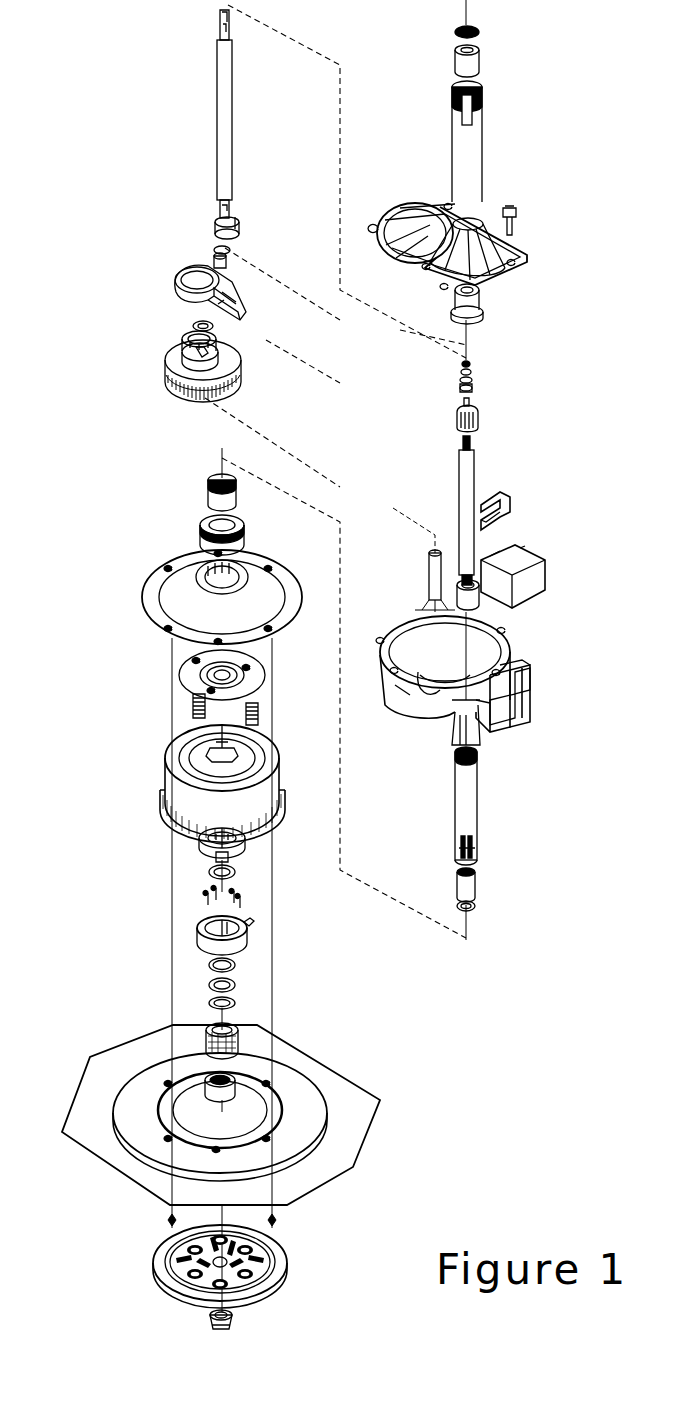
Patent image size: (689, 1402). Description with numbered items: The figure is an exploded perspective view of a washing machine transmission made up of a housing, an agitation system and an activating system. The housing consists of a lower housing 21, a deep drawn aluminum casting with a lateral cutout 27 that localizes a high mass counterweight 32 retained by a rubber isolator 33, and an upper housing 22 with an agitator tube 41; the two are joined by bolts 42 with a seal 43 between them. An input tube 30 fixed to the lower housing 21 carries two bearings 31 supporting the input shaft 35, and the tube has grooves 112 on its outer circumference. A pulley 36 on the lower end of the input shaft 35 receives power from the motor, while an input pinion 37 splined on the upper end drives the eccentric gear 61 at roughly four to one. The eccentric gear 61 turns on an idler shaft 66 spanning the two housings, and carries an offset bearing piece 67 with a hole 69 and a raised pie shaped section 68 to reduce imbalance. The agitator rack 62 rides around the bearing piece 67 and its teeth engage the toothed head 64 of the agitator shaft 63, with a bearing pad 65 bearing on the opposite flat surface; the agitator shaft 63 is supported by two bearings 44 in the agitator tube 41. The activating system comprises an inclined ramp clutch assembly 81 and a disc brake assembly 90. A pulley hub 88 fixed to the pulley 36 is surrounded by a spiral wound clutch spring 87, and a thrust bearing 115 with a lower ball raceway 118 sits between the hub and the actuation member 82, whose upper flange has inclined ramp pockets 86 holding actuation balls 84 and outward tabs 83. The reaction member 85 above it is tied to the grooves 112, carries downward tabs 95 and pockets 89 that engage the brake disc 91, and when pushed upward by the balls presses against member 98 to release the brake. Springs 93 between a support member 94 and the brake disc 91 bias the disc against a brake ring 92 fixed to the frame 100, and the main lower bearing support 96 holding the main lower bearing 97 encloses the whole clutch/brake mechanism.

The lower housing 21 is at (384, 672).
The upper housing 22 is at (520, 256).
The lateral cutout 27 is at (510, 706).
The input tube 30 is at (475, 800).
The bearings 31 is at (480, 598).
The counterweight 32 is at (545, 555).
The rubber isolator 33 is at (510, 495).
The input shaft 35 is at (471, 475).
The pulley 36 is at (156, 1257).
The input pinion 37 is at (475, 410).
The agitator tube 41 is at (477, 152).
The bolts 42 is at (514, 210).
The seal 43 is at (514, 656).
The bearings 44 is at (479, 60).
The eccentric gear 61 is at (168, 372).
The agitator rack 62 is at (178, 276).
The agitator shaft 63 is at (217, 178).
The toothed head 64 is at (215, 225).
The bearing pad 65 is at (214, 258).
The idler shaft 66 is at (430, 575).
The bearing piece 67 is at (183, 342).
The raised pie shaped section 68 is at (207, 371).
The hole 69 is at (194, 326).
The inclined ramp clutch assembly 81 is at (86, 946).
The actuation member 82 is at (207, 963).
The tabs 83 is at (265, 929).
The actuation balls 84 is at (240, 896).
The reaction member 85 is at (200, 845).
The inclined ramp pockets 86 is at (244, 920).
The clutch spring 87 is at (206, 1040).
The pulley hub 88 is at (206, 1086).
The pockets 89 is at (243, 838).
The disc brake assembly 90 is at (86, 826).
The brake disc 91 is at (284, 800).
The brake ring 92 is at (162, 1106).
The springs 93 is at (193, 703).
The support member 94 is at (186, 674).
The tabs 95 is at (244, 850).
The main lower bearing support 96 is at (152, 596).
The main lower bearing 97 is at (200, 532).
The member 98 is at (166, 757).
The frame 100 is at (94, 1102).
The grooves 112 is at (475, 850).
The thrust bearing 115 is at (252, 975).
The lower ball raceway 118 is at (470, 376).